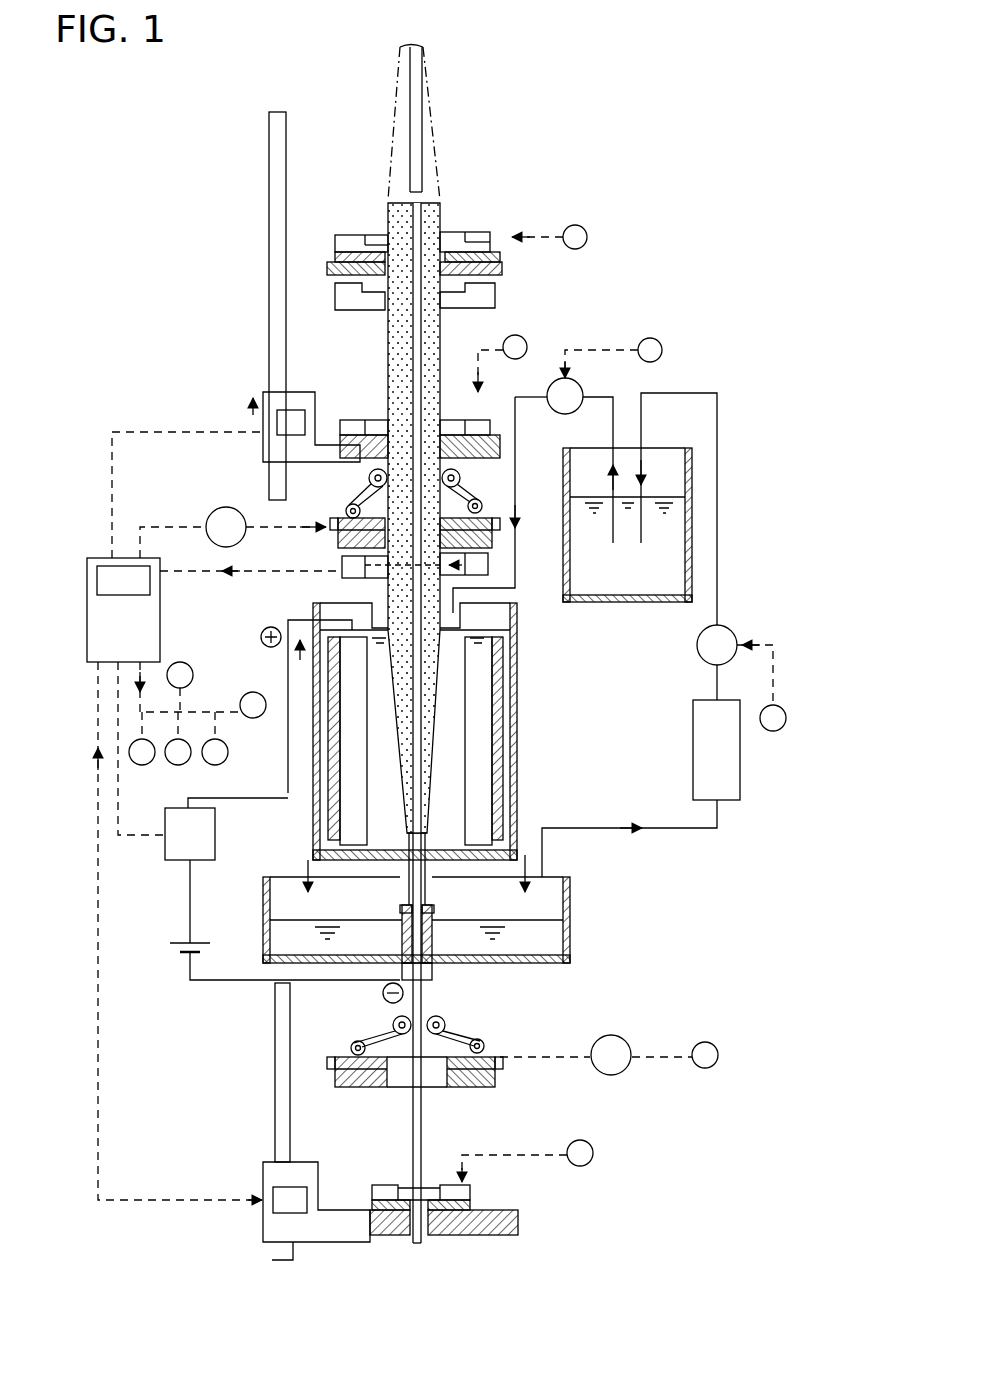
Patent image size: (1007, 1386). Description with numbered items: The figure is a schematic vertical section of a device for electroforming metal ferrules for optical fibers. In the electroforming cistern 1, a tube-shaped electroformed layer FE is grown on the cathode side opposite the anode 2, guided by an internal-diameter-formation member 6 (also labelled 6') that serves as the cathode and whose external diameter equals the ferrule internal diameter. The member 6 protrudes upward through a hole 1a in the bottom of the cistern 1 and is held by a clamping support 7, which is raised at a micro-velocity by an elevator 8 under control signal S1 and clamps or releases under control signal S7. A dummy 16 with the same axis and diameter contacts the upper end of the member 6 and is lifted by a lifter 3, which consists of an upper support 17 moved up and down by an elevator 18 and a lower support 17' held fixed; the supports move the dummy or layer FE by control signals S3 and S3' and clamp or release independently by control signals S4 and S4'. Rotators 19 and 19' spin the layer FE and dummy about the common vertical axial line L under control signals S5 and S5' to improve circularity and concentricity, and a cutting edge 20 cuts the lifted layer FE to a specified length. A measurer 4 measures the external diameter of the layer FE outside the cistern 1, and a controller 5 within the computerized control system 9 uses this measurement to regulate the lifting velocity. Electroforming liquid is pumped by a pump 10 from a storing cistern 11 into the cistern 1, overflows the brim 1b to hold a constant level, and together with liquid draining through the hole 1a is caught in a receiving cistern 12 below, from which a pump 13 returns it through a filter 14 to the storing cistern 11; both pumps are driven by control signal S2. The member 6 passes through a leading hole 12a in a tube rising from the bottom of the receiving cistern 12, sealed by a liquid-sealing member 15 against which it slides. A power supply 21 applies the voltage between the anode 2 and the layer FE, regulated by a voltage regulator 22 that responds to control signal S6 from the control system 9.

The electroforming cistern 1 is at (517, 715).
The hole 1a is at (400, 850).
The brim 1b is at (515, 605).
The anode 2 is at (350, 800).
The lifter 3 is at (264, 228).
The measurer 4 is at (342, 570).
The controller 5 is at (107, 582).
The internal-diameter-formation member 6 is at (450, 723).
The center tube 6' is at (485, 1118).
The support 7 is at (470, 1192).
The elevator 8 is at (310, 1165).
The control system 9 is at (97, 638).
The pump 10 is at (555, 412).
The storing cistern 11 is at (630, 604).
The receiving cistern 12 is at (570, 905).
The leading hole 12a is at (432, 978).
The pump 13 is at (698, 655).
The filter 14 is at (733, 782).
The liquid-sealing member 15 is at (432, 905).
The dummy 16 is at (428, 104).
The support 17 is at (420, 418).
The support 17' is at (423, 219).
The elevator 18 is at (312, 395).
The rotator 19 is at (422, 506).
The rotator 19' is at (426, 1046).
The cutting edge 20 is at (495, 298).
The power supply 21 is at (175, 952).
The voltage regulator 22 is at (182, 855).
The control signal S1 is at (100, 1030).
The control signal S2 is at (660, 342).
The control signal S3 is at (173, 400).
The control signal S3' is at (173, 384).
The control signal S4 is at (414, 483).
The control signal S4' is at (239, 762).
The control signal S5 is at (200, 507).
The control signal S5' is at (467, 835).
The control signal S6 is at (133, 852).
The control signal S7 is at (248, 692).
The electroformed layer FE is at (388, 350).
The vertical axial line L is at (417, 1250).